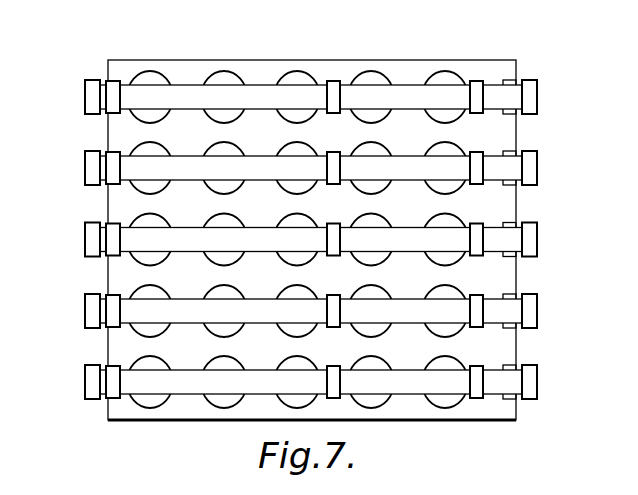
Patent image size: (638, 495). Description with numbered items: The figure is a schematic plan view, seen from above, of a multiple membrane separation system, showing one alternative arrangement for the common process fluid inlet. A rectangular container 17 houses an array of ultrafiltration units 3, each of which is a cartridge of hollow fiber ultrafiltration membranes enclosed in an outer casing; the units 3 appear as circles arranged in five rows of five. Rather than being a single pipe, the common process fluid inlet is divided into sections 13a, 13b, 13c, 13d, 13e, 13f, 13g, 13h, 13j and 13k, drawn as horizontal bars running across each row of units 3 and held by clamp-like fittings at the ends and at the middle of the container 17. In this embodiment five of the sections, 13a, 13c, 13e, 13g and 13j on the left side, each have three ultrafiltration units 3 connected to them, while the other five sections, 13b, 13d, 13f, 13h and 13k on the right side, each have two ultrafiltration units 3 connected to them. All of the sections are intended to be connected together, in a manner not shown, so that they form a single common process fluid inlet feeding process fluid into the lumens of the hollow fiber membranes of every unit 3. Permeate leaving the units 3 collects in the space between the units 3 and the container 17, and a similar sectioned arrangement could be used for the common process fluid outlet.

The ultrafiltration unit 3 is at (153, 72).
The container 17 is at (500, 60).
The section of common process fluid inlet 13a is at (142, 103).
The section of common process fluid inlet 13b is at (453, 100).
The section of common process fluid inlet 13c is at (141, 173).
The section of common process fluid inlet 13d is at (453, 171).
The section of common process fluid inlet 13e is at (141, 244).
The section of common process fluid inlet 13f is at (453, 243).
The section of common process fluid inlet 13g is at (141, 316).
The section of common process fluid inlet 13h is at (460, 312).
The section of common process fluid inlet 13j is at (140, 387).
The section of common process fluid inlet 13k is at (455, 385).